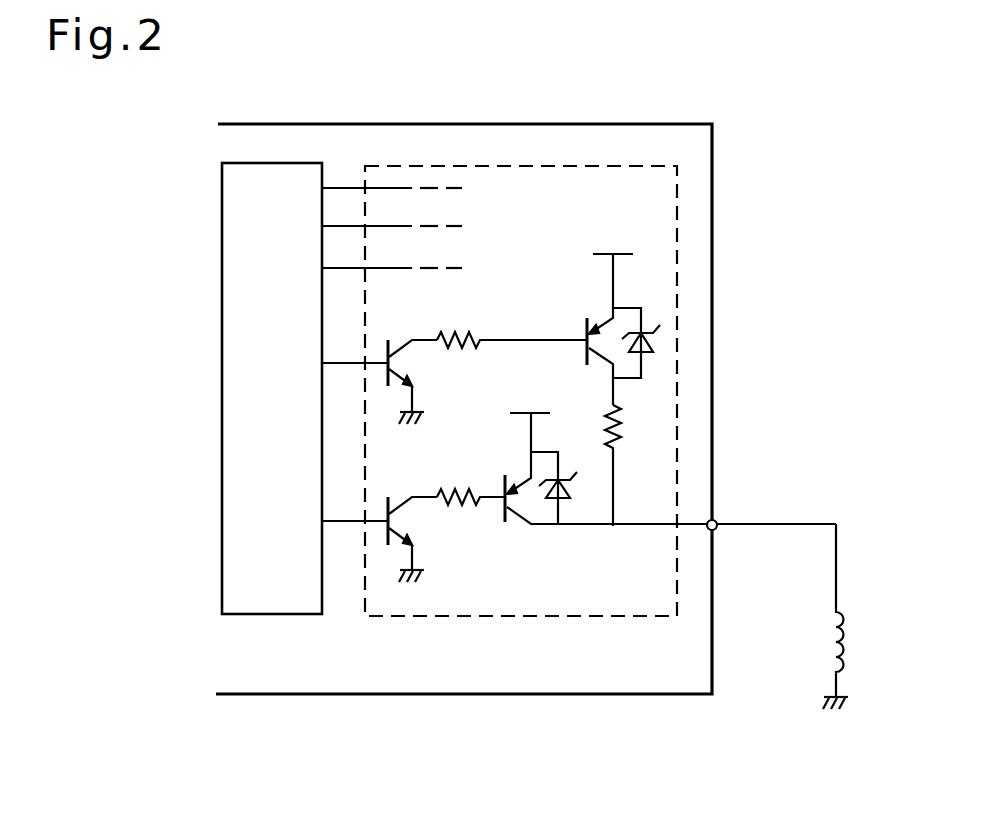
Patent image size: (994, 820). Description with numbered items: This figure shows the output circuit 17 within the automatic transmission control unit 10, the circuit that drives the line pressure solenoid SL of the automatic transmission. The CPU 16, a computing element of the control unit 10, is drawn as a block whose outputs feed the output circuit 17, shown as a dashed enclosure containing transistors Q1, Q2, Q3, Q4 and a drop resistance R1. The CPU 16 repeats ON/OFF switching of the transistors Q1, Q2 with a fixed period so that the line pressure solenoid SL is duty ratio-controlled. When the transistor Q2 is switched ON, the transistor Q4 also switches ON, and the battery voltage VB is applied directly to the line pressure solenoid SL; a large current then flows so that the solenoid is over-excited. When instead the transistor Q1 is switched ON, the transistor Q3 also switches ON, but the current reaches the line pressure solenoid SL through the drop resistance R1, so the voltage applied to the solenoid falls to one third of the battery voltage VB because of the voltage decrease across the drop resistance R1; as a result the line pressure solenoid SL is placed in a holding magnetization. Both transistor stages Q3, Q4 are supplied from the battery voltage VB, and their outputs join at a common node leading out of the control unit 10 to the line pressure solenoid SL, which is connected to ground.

The automatic transmission control unit 10 is at (714, 342).
The CPU 16 is at (262, 617).
The output circuit 17 is at (527, 620).
The transistor Q1 is at (397, 343).
The transistor Q2 is at (398, 501).
The transistor Q3 is at (599, 322).
The transistor Q4 is at (521, 476).
The drop resistance R1 is at (608, 418).
The battery voltage VB is at (574, 317).
The line pressure solenoid SL is at (833, 651).